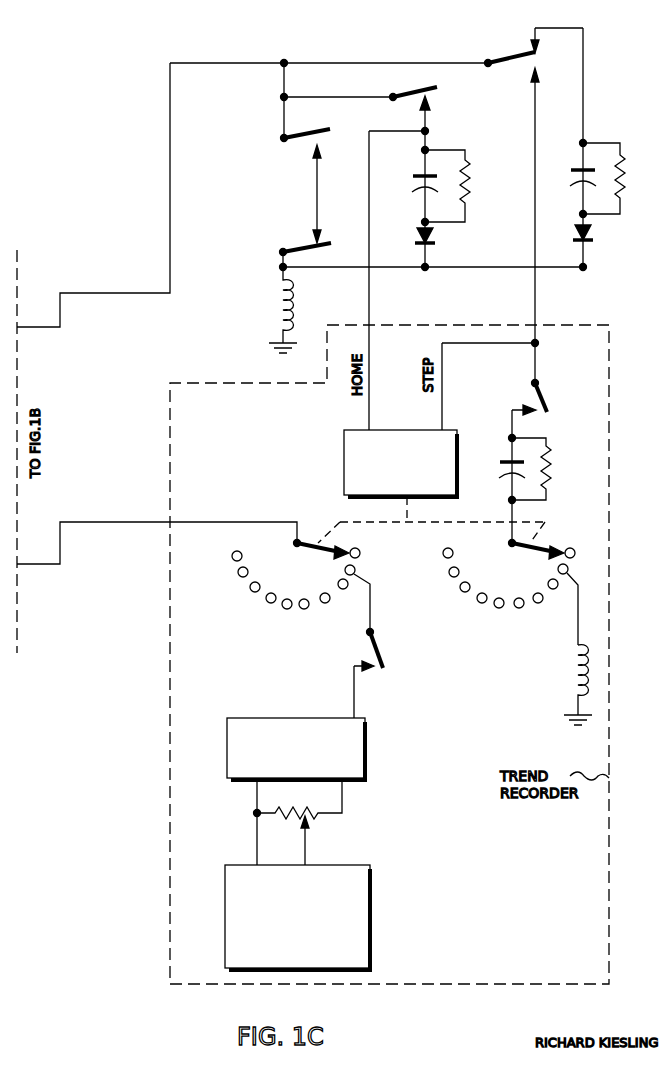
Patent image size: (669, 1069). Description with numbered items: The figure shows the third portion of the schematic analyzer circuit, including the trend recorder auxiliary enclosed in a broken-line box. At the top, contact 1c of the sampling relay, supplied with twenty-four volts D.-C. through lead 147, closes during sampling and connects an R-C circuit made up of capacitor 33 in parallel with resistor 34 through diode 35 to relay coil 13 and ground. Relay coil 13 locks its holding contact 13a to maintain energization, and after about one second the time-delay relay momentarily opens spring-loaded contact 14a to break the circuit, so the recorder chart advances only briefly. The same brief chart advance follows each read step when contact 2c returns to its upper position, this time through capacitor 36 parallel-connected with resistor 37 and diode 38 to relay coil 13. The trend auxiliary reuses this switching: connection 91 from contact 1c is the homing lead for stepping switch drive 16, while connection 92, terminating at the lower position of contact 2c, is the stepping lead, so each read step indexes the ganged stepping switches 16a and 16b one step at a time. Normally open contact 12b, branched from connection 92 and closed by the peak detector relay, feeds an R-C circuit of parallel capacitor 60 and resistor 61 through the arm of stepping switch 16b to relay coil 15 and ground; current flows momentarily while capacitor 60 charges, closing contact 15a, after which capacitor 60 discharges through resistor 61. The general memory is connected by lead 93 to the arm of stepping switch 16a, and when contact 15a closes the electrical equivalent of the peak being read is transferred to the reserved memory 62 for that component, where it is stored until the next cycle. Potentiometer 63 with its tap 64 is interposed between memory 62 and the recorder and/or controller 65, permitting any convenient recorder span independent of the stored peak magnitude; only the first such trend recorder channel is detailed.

The relay contact 1c is at (413, 92).
The relay contact 2c is at (495, 56).
The holding contact 13a is at (297, 133).
The spring-loaded contact 14a is at (310, 248).
The relay coil 13 is at (273, 307).
The capacitor 33 is at (420, 173).
The resistor 34 is at (470, 191).
The diode 35 is at (437, 245).
The capacitor 36 is at (580, 164).
The resistor 37 is at (624, 196).
The diode 38 is at (597, 240).
The circuit connection 91 is at (368, 281).
The connection 92 is at (531, 240).
The lead 147 is at (30, 328).
The lead 93 is at (37, 557).
The stepping switch drive 16 is at (342, 438).
The relay contact 12b is at (543, 406).
The capacitor 60 is at (509, 461).
The resistor 61 is at (553, 476).
The stepping switch 16a is at (305, 580).
The stepping switch 16b is at (508, 585).
The relay contact 15a is at (373, 652).
The relay coil 15 is at (565, 680).
The memory 62 is at (259, 718).
The potentiometer 63 is at (323, 811).
The tap 64 is at (311, 828).
The recorder/controller 65 is at (353, 873).